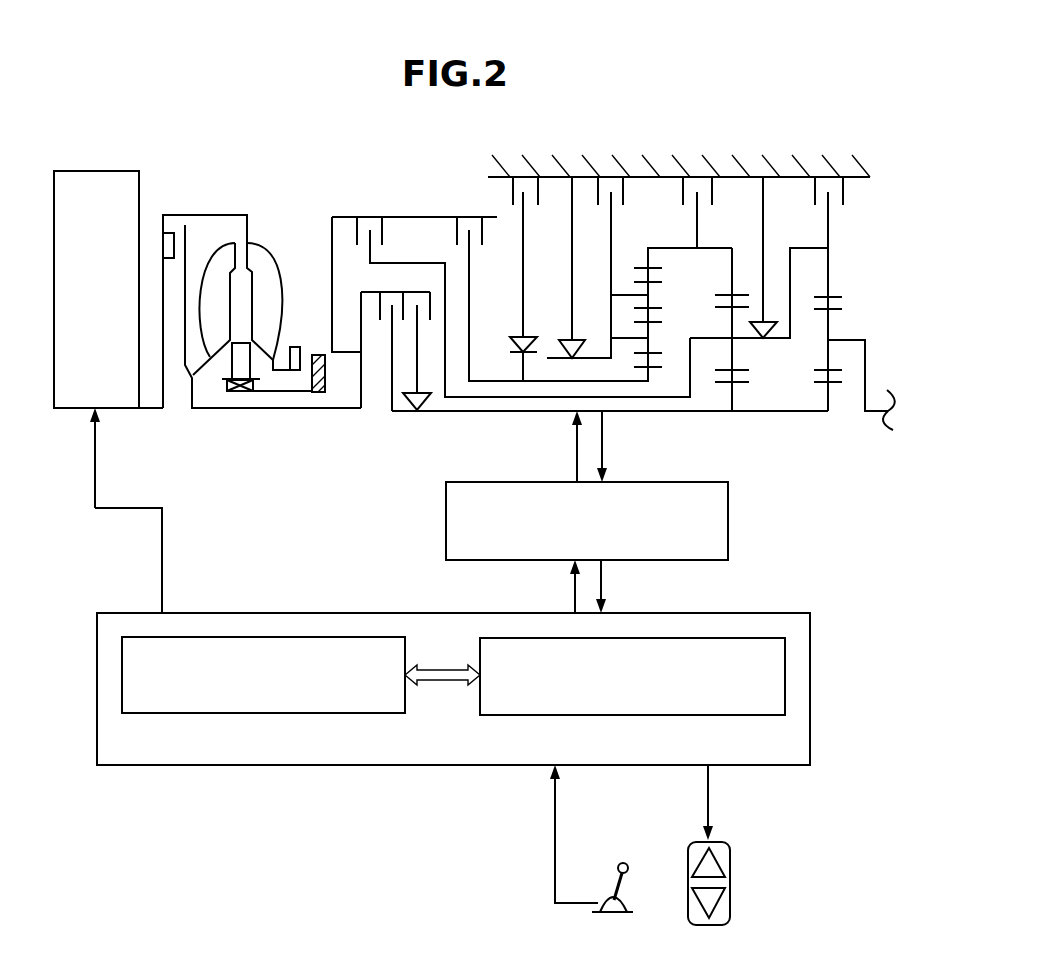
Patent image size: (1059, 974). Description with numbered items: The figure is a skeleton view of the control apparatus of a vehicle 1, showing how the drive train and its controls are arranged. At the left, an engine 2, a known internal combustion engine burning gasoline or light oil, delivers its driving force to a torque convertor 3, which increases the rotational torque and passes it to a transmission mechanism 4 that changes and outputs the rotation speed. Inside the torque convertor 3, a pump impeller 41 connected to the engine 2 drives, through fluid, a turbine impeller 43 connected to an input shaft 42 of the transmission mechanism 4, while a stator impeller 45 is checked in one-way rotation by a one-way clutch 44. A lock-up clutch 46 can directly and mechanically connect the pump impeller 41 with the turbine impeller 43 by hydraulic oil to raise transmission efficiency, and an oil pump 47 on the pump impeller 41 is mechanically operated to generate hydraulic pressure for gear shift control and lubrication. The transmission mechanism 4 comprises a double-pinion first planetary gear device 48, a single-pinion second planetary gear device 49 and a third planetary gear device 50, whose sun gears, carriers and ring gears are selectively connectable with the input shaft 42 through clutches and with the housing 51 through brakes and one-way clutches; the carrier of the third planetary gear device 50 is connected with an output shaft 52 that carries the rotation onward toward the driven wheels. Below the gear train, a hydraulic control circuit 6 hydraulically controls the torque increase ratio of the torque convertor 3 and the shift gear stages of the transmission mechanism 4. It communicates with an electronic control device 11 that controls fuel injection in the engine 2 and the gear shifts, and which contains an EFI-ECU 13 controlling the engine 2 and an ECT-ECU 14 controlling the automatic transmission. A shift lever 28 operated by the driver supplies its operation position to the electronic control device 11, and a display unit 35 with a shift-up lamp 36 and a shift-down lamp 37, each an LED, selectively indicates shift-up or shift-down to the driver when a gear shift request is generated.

The vehicle 1 is at (805, 38).
The engine 2 is at (118, 171).
The torque convertor 3 is at (419, 286).
The transmission mechanism 4 is at (614, 282).
The hydraulic control circuit 6 is at (728, 548).
The electronic control device 11 is at (433, 701).
The EFI-ECU 13 is at (243, 637).
The ECT-ECU 14 is at (785, 663).
The shift lever 28 is at (627, 870).
The display unit 35 is at (744, 868).
The shift-up lamp 36 is at (725, 863).
The shift-down lamp 37 is at (728, 898).
The pump impeller 41 is at (268, 250).
The input shaft 42 is at (278, 408).
The turbine impeller 43 is at (222, 247).
The one-way clutch 44 is at (240, 392).
The stator impeller 45 is at (230, 354).
The lock-up clutch 46 is at (170, 233).
The oil pump 47 is at (296, 347).
The first planetary gear device 48 is at (655, 408).
The second planetary gear device 49 is at (733, 433).
The third planetary gear device 50 is at (825, 433).
The housing 51 is at (317, 393).
The output shaft 52 is at (877, 412).